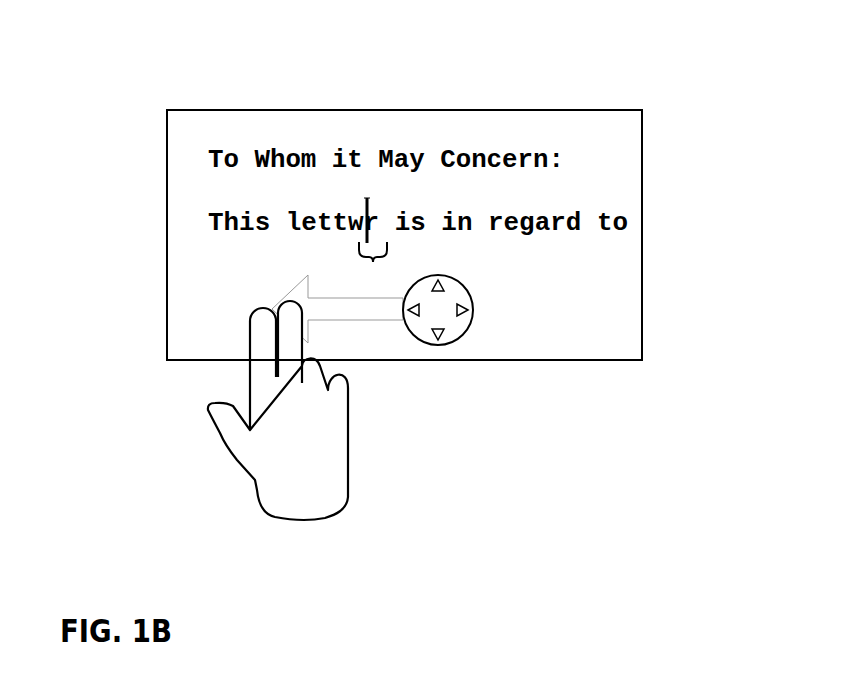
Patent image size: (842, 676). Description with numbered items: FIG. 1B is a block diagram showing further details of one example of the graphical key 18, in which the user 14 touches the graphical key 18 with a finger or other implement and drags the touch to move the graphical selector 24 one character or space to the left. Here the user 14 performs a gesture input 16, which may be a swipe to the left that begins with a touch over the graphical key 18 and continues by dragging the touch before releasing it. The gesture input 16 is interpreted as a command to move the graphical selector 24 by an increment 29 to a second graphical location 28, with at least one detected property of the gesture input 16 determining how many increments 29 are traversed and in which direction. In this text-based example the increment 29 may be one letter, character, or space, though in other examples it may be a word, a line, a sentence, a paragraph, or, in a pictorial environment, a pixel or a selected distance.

The user 14 is at (312, 468).
The gesture input 16 is at (385, 328).
The graphical key 18 is at (482, 318).
The graphical selector 24 is at (360, 200).
The second graphical location 28 is at (368, 189).
The increment 29 is at (395, 247).